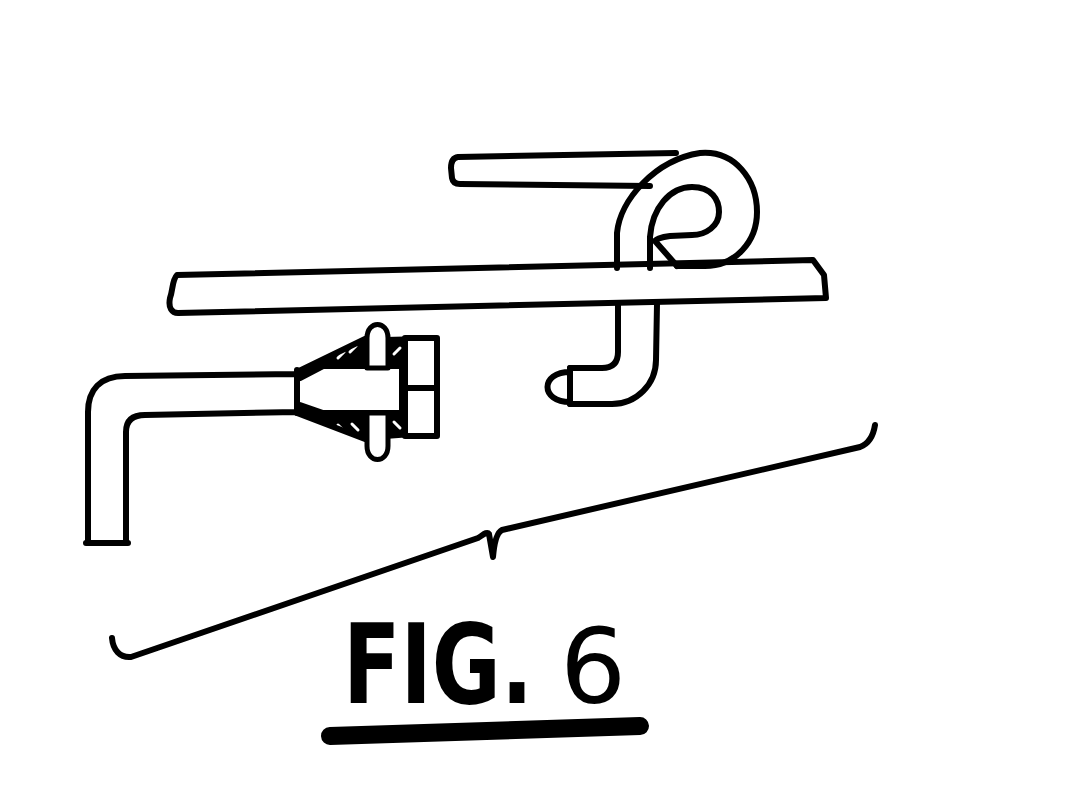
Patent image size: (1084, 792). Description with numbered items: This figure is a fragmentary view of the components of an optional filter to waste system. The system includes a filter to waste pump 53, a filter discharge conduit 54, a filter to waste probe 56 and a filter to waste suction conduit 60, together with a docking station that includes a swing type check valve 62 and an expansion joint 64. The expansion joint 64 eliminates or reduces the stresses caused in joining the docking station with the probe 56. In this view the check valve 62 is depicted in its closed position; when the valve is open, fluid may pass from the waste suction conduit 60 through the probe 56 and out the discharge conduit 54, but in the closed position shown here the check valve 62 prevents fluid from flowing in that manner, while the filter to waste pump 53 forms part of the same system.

The filter to waste pump 53 is at (750, 182).
The filter discharge conduit 54 is at (525, 157).
The filter to waste probe 56 is at (645, 390).
The filter to waste suction conduit 60 is at (114, 494).
The swing type check valve 62 is at (437, 392).
The expansion joint 64 is at (375, 447).